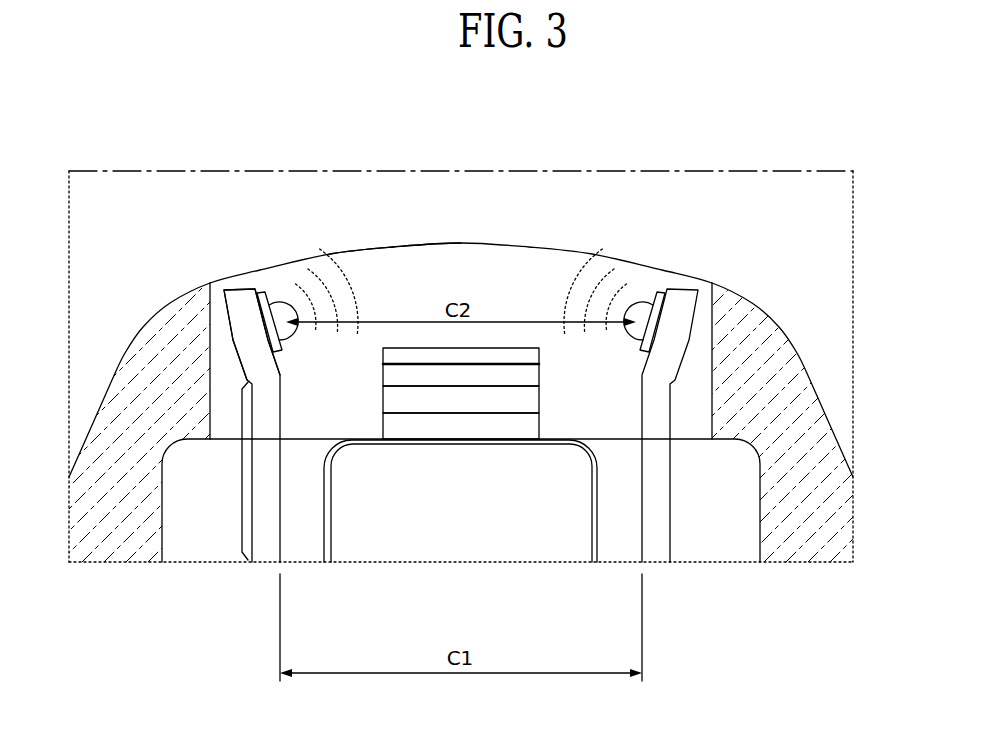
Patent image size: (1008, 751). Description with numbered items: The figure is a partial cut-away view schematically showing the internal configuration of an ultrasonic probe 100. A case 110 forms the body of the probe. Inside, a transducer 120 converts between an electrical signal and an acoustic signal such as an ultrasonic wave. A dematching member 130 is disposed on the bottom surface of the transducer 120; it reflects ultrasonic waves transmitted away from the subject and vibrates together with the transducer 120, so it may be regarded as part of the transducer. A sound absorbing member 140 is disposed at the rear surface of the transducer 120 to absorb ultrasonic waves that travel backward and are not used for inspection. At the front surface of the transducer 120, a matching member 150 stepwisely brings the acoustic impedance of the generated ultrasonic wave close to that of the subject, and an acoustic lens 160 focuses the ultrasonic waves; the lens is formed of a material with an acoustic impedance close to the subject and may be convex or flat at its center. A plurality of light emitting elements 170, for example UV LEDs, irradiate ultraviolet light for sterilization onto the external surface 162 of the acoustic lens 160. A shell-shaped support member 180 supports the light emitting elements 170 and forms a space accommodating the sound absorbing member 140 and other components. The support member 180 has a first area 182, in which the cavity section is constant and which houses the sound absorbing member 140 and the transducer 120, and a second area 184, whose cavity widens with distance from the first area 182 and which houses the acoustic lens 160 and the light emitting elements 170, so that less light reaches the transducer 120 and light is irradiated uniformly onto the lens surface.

The ultrasonic probe 100 is at (728, 220).
The case 110 is at (157, 326).
The transducer 120 is at (533, 401).
The dematching member 130 is at (533, 425).
The sound absorbing member 140 is at (452, 553).
The matching member 150 is at (544, 349).
The acoustic lens 160 is at (461, 268).
The external surface of the acoustic lens 162 is at (393, 247).
The light emitting element 170 is at (272, 298).
The support member 180 is at (441, 453).
The first area 182 is at (236, 470).
The second area 184 is at (229, 348).